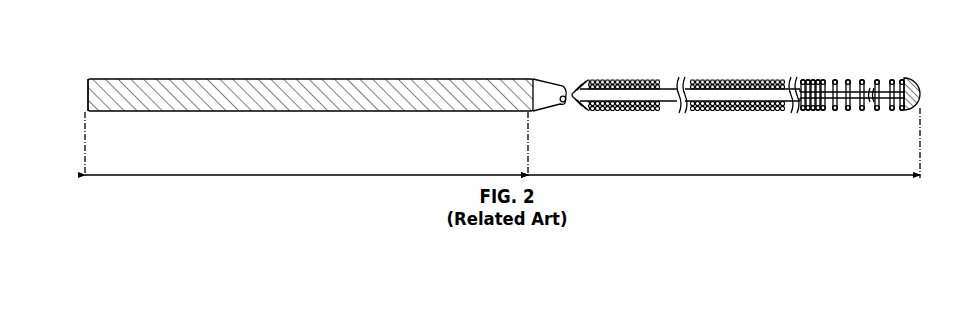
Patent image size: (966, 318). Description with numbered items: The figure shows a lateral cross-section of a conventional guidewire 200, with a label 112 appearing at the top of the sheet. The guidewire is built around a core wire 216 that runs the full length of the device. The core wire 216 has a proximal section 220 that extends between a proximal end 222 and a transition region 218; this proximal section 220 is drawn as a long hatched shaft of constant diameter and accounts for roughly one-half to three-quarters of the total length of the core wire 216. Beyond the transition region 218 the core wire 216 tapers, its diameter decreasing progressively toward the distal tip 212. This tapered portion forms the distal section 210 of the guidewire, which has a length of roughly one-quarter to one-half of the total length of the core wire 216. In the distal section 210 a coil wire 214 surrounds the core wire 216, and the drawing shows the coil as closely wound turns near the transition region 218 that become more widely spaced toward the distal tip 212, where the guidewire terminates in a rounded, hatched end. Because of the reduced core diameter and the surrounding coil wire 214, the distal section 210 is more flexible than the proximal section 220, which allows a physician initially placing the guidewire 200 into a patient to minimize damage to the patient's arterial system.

The conventional guidewire 200 is at (161, 27).
The catheter 112 is at (287, 0).
The proximal end 222 is at (87, 108).
The proximal section 220 is at (310, 92).
The transition region 218 is at (545, 100).
The distal section 210 is at (716, 90).
The core wire 216 is at (663, 97).
The coil wire 214 is at (838, 107).
The distal tip 212 is at (921, 84).